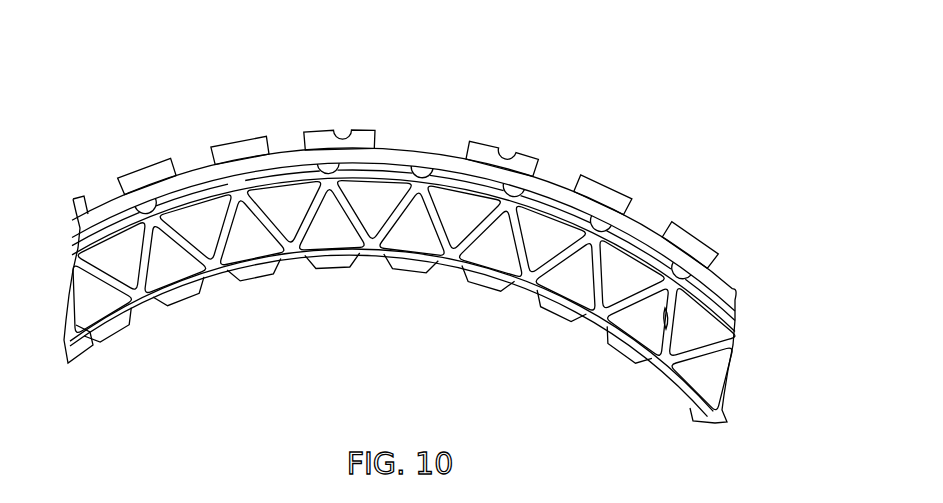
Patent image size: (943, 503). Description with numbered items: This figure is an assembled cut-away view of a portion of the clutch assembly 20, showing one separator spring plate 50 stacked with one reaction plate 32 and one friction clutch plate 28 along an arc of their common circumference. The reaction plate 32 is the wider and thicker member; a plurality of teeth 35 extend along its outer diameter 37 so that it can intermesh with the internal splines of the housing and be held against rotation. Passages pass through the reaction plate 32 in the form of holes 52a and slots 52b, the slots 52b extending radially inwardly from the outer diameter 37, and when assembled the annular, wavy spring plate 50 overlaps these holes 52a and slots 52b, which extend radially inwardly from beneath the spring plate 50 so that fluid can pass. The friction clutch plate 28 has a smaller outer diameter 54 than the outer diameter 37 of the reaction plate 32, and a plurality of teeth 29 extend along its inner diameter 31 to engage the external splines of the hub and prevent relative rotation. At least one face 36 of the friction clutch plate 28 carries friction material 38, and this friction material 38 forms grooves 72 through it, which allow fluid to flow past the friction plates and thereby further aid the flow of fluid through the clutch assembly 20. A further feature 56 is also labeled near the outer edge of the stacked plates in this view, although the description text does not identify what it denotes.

The clutch assembly 20 is at (752, 223).
The friction clutch plate 28 is at (507, 292).
The teeth 29 is at (266, 274).
The inner diameter 31 is at (405, 281).
The reaction plate 32 is at (599, 181).
The teeth 35 is at (224, 142).
The face 36 is at (676, 341).
The outer diameter 37 is at (372, 131).
The friction material 38 is at (636, 332).
The spring plate 50 is at (640, 232).
The holes 52a is at (148, 202).
The slots 52b is at (426, 170).
The outer diameter 54 is at (718, 307).
The inner edge of rail 56 is at (724, 303).
The grooves 72 is at (708, 332).